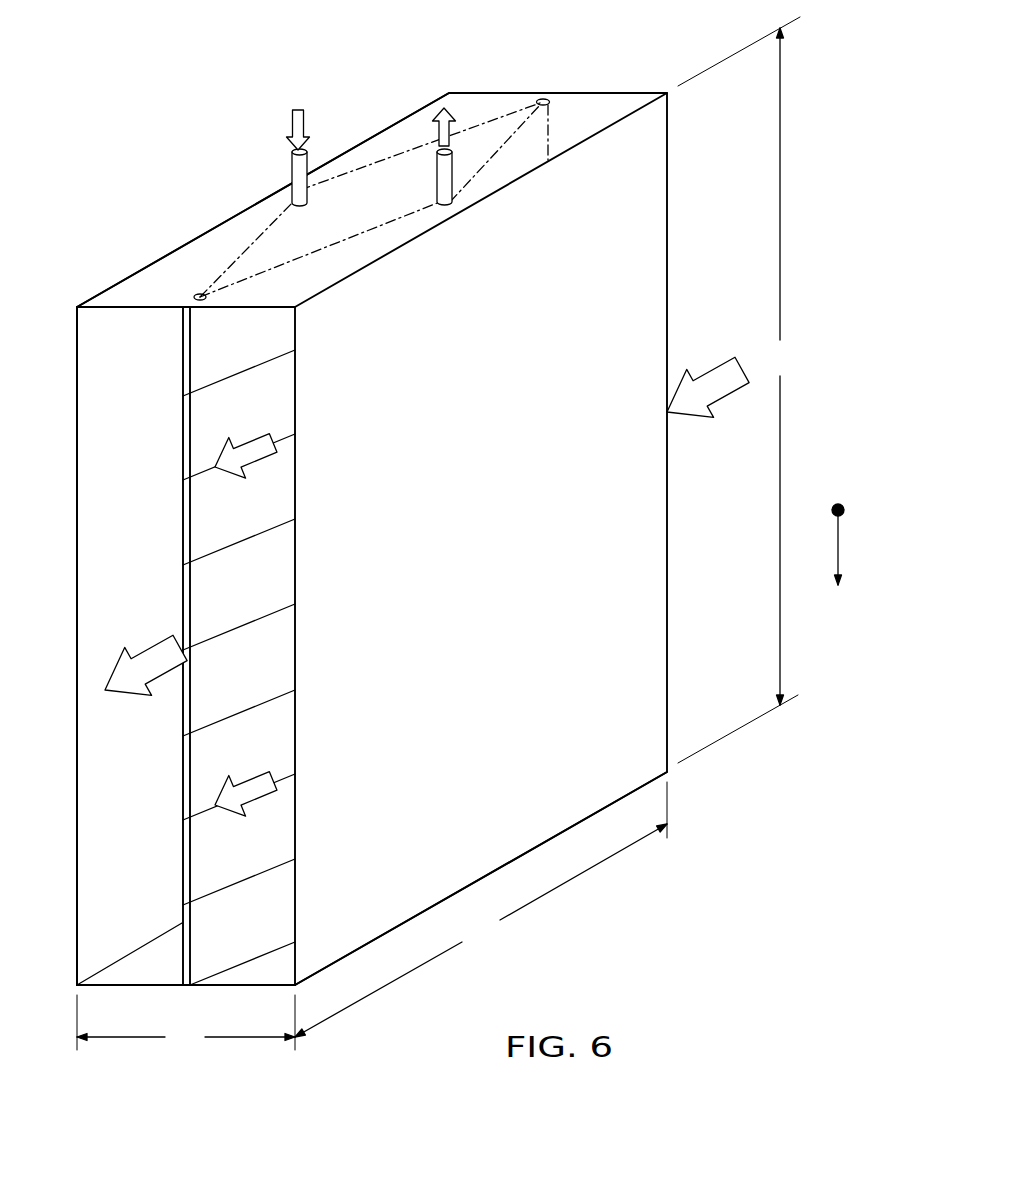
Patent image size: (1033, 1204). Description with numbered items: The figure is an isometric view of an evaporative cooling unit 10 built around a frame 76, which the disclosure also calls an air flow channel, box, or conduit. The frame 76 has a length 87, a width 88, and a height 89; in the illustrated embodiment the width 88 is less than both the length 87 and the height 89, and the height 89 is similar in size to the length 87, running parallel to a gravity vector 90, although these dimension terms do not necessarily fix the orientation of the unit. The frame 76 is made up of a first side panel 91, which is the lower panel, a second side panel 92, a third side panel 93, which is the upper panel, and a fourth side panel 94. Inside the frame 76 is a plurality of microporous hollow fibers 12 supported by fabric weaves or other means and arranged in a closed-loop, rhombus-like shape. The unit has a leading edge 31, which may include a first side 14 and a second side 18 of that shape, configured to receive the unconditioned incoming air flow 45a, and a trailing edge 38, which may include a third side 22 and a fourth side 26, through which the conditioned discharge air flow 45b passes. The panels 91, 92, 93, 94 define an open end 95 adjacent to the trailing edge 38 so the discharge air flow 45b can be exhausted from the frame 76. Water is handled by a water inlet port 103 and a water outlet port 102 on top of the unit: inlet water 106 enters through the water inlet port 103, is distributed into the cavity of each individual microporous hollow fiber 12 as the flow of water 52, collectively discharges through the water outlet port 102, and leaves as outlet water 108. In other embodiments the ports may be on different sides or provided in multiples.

The evaporative cooling unit 10 is at (152, 165).
The microporous hollow fibers 12 is at (281, 443).
The first side 14 is at (493, 157).
The second side 18 is at (370, 167).
The third side 22 is at (357, 236).
The fourth side 26 is at (247, 248).
The leading edge 31 is at (560, 123).
The trailing edge 38 is at (169, 530).
The air flow (unconditioned input air) 45a is at (735, 358).
The air flow (conditioned discharge air) 45b is at (173, 640).
The flow of water 52 is at (252, 440).
The frame 76 is at (75, 366).
The length 87 is at (481, 909).
The width 88 is at (186, 1024).
The height 89 is at (739, 390).
The gravity vector 90 is at (836, 548).
The first side panel 91 is at (113, 988).
The second side panel 92 is at (346, 945).
The third side panel 93 is at (142, 285).
The fourth side panel 94 is at (76, 418).
The open end 95 is at (104, 876).
The water outlet port 102 is at (446, 198).
The water inlet port 103 is at (292, 166).
The inlet water 106 is at (290, 124).
The outlet water 108 is at (436, 130).